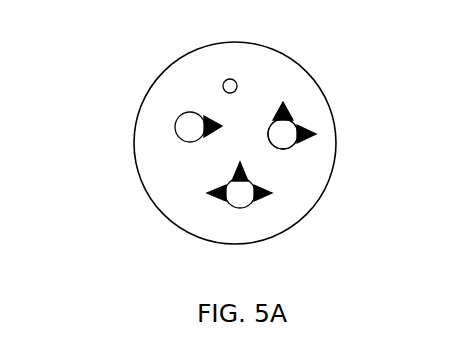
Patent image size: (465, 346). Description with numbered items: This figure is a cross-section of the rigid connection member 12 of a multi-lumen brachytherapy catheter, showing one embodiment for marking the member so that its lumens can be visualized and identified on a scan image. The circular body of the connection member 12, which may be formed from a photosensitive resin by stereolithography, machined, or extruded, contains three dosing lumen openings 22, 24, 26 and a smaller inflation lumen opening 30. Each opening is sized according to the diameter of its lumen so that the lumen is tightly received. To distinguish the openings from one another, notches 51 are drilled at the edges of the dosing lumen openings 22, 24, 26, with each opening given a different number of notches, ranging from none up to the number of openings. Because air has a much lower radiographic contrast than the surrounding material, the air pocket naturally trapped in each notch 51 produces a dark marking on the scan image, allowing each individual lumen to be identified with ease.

The rigid connection member 12 is at (142, 104).
The inflation lumen opening 30 is at (223, 79).
The dosing lumen opening 22 is at (183, 130).
The notches 51 is at (300, 135).
The dosing lumen opening 24 is at (292, 153).
The dosing lumen opening 26 is at (228, 207).